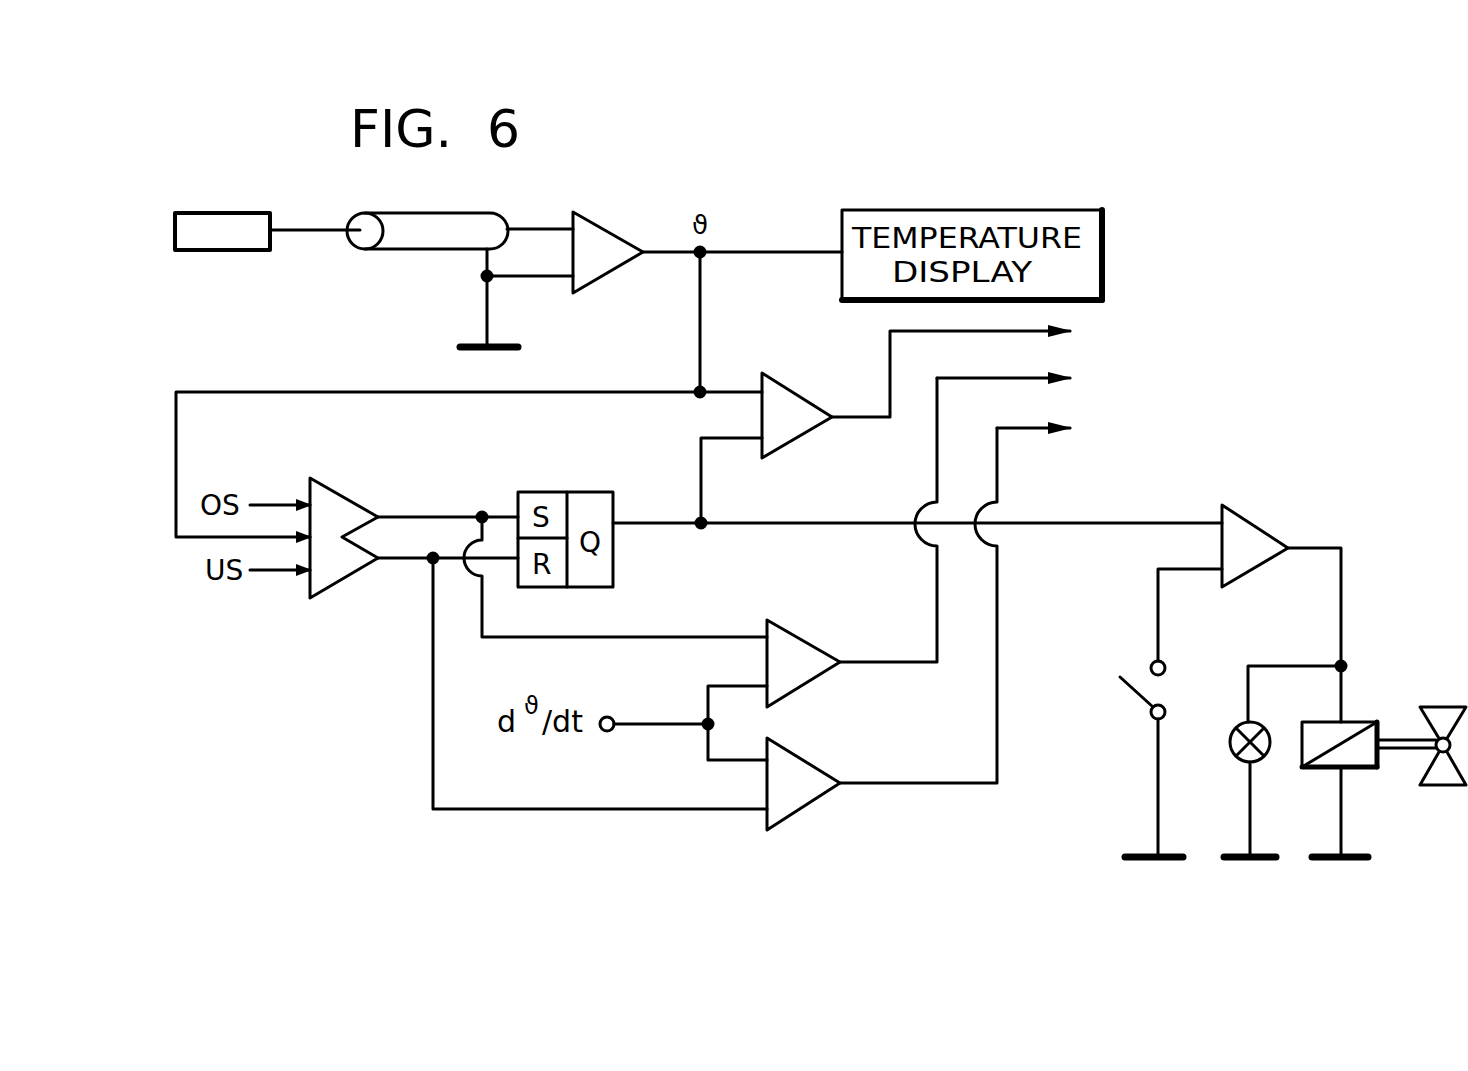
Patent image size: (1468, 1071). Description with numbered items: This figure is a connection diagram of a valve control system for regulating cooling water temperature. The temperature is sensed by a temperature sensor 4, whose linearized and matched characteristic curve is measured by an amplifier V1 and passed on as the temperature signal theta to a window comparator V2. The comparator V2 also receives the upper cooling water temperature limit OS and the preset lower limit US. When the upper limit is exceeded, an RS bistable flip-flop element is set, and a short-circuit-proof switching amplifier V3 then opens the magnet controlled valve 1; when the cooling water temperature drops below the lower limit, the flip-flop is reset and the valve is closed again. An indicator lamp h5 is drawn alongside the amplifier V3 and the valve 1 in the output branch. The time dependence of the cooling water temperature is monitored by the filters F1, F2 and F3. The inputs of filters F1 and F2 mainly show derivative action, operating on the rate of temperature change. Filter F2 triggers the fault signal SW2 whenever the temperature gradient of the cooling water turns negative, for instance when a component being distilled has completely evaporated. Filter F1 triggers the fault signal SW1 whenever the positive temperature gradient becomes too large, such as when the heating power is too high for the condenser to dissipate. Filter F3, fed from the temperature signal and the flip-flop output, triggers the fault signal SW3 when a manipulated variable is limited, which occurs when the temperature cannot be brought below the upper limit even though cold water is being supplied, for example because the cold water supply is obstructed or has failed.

The temperature sensor 4 is at (192, 228).
The magnet controlled valve 1 is at (1440, 776).
The amplifier V1 is at (608, 252).
The window comparator V2 is at (344, 538).
The short-circuit-proof switching amplifier V3 is at (1255, 546).
The filter F1 is at (803, 663).
The filter F2 is at (803, 784).
The filter F3 is at (797, 415).
The indicator lamp h5 is at (1227, 742).
The fault signal SW1 is at (1111, 379).
The fault signal SW2 is at (1111, 429).
The fault signal SW3 is at (1111, 332).